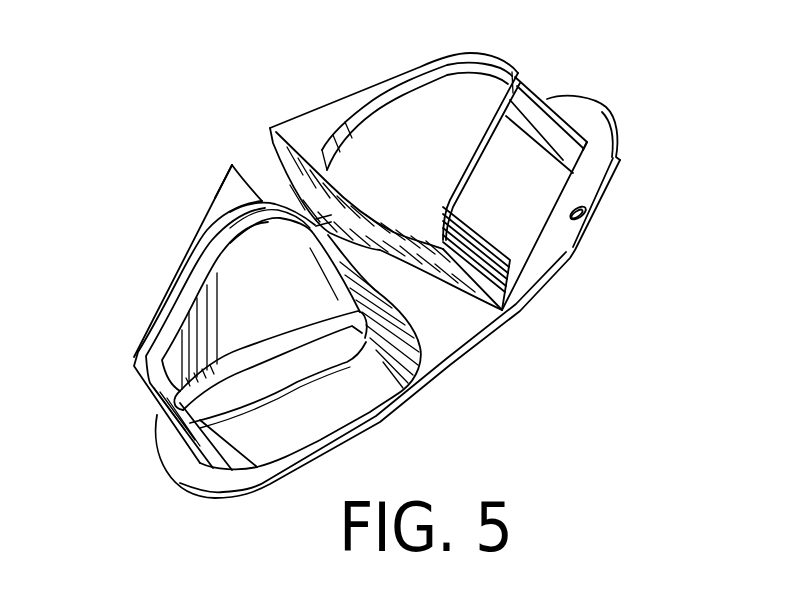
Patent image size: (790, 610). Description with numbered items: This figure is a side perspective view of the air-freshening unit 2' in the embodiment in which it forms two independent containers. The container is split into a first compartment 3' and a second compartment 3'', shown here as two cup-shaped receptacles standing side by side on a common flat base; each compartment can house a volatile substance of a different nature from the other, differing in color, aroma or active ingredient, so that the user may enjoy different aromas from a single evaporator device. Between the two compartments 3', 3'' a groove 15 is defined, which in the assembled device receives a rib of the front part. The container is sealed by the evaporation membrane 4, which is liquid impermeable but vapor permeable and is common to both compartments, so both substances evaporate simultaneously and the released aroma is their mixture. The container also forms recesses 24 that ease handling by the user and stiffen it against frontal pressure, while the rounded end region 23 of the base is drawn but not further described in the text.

The holder assembly 2' is at (392, 299).
The compartment 3' is at (239, 317).
The compartment 3'' is at (505, 156).
The evaporation membrane 4 is at (261, 473).
The groove 15 is at (258, 176).
The rounded end portion of base plate 23 is at (182, 462).
The recesses 24 is at (422, 145).